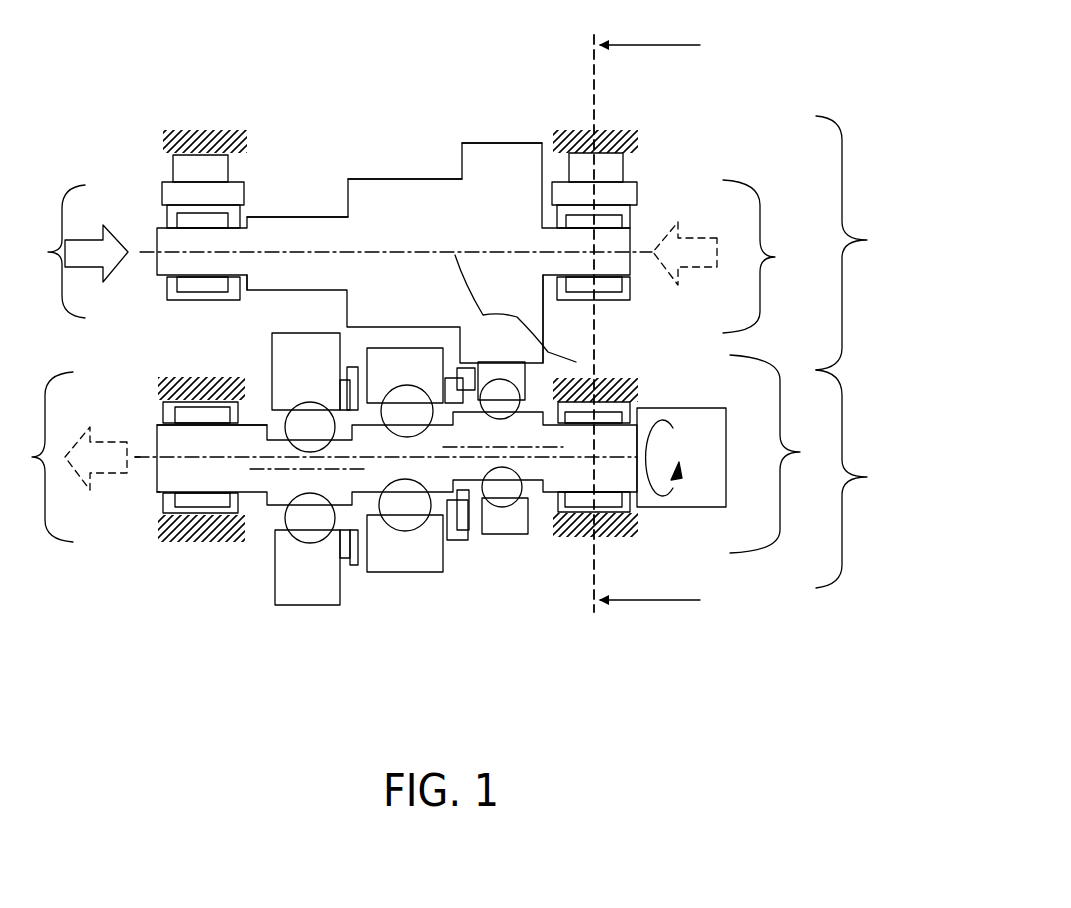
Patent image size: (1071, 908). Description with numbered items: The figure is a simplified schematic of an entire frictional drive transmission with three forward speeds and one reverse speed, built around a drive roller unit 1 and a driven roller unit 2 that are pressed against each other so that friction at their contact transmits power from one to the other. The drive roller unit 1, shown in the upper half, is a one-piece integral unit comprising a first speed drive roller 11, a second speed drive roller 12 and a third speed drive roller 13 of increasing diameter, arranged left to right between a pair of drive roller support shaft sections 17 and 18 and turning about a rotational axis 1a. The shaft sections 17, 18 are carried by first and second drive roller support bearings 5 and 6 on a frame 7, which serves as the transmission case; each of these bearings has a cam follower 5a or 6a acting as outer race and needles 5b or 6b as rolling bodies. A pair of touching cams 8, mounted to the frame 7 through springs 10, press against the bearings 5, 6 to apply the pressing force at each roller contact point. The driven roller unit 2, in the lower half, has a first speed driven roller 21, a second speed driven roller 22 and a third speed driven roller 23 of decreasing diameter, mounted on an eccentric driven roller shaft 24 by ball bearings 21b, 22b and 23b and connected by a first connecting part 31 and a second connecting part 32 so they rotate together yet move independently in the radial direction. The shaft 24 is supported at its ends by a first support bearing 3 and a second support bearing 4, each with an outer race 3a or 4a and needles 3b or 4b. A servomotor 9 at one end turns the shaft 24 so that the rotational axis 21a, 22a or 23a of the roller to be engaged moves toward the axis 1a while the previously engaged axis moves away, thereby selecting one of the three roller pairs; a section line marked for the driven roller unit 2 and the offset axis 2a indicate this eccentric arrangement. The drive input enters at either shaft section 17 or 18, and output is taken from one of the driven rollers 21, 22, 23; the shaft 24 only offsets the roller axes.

The drive roller unit 1 is at (516, 243).
The rotational axis of the drive roller unit 1a is at (516, 312).
The driven roller unit 2 is at (513, 323).
The axis of second shaft 2a is at (157, 493).
The first support bearing 3 is at (72, 457).
The outer race 3a is at (170, 405).
The needles 3b is at (178, 418).
The second support bearing 4 is at (775, 454).
The outer race 4a is at (625, 408).
The needles 4b is at (620, 416).
The first drive roller support bearing 5 is at (75, 251).
The cam follower 5a is at (172, 212).
The needles 5b is at (178, 224).
The second drive roller support bearing 6 is at (724, 256).
The cam follower 6a is at (625, 210).
The needles 6b is at (615, 224).
The frame 7 is at (175, 137).
The touching cams 8 is at (170, 190).
The servomotor 9 is at (710, 470).
The springs 10 is at (190, 167).
The first speed drive roller 11 is at (335, 221).
The second speed drive roller 12 is at (433, 190).
The third speed drive roller 13 is at (535, 145).
The drive roller support shaft section 17 is at (236, 277).
The drive roller support shaft section 18 is at (543, 276).
The first speed driven roller 21 is at (292, 590).
The rotational axis of the first speed driven roller 21a is at (282, 470).
The ball bearing 21b is at (305, 427).
The second speed driven roller 22 is at (392, 565).
The rotational axis of the second speed driven roller 22a is at (453, 460).
The ball bearing 22b is at (397, 395).
The third speed driven roller 23 is at (503, 527).
The rotational axis of the third speed driven roller 23a is at (530, 450).
The ball bearing 23b is at (513, 398).
The eccentric driven roller shaft 24 is at (170, 440).
The first connecting part 31 is at (340, 392).
The second connecting part 32 is at (445, 392).